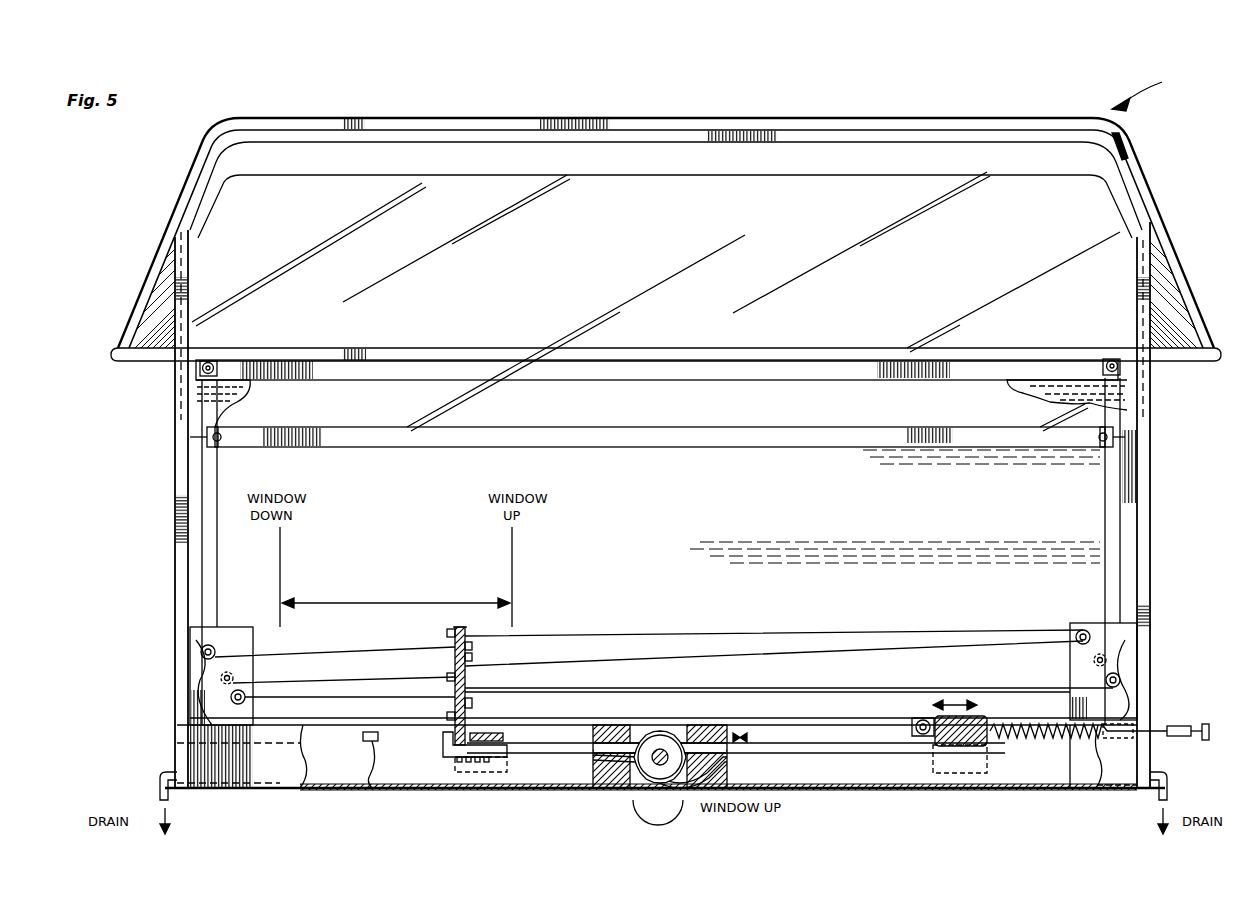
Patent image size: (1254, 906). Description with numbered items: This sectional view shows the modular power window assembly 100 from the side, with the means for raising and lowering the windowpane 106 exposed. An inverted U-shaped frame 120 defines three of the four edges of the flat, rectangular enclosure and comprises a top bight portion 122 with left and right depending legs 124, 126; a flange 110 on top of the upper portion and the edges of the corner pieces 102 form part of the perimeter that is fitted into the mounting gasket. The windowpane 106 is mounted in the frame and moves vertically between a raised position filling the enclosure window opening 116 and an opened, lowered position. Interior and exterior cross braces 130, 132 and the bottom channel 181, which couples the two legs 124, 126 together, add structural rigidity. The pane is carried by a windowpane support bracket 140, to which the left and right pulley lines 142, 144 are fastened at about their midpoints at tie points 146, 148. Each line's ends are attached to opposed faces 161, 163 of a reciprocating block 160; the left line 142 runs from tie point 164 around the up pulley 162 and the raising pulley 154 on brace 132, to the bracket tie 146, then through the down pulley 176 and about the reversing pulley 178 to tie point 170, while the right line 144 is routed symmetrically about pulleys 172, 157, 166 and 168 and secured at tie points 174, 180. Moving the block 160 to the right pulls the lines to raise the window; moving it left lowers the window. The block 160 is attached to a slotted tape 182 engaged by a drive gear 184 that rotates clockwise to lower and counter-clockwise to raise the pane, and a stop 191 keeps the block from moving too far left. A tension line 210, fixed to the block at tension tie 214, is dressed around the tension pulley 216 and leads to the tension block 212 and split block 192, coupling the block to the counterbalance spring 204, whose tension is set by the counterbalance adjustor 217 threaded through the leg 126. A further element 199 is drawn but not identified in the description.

The power window assembly 100 is at (1154, 93).
The corner pieces 102 is at (160, 287).
The windowpane 106 is at (662, 367).
The flange 110 is at (898, 120).
The enclosure window opening 116 is at (397, 157).
The inverted U-shaped frame 120 is at (1112, 161).
The top bight portion 122 is at (677, 135).
The left depending leg 124 is at (187, 272).
The right depending leg 126 is at (1136, 283).
The interior cross brace 130 is at (447, 350).
The exterior cross brace 132 is at (180, 370).
The windowpane support bracket 140 is at (738, 447).
The left pulley line 142 is at (203, 532).
The right pulley line 144 is at (1137, 500).
The tie point 146 is at (207, 437).
The tie point 148 is at (1117, 433).
The raising pulley 154 is at (210, 352).
The pulley 157 is at (1108, 352).
The reciprocating block 160 is at (466, 629).
The right face of block 161 is at (472, 660).
The up pulley 162 is at (202, 648).
The opposed face of block 163 is at (448, 633).
The tie point 164 is at (470, 643).
The pulley 166 is at (1120, 681).
The reversing pulley 168 is at (231, 695).
The tie point 170 is at (472, 703).
The pulley 172 is at (1107, 657).
The tie point 174 is at (451, 626).
The down pulley 176 is at (220, 678).
The reversing pulley 178 is at (1085, 630).
The tie point 180 is at (448, 677).
The bottom channel 181 is at (250, 789).
The slotted tape 182 is at (528, 758).
The drive gear 184 is at (660, 744).
The stop 191 is at (365, 789).
The split block 192 is at (620, 727).
The clip 199 is at (740, 732).
The counterbalance spring 204 is at (1042, 745).
The tension line 210 is at (810, 717).
The tension block 212 is at (987, 715).
The tension tie 214 is at (448, 717).
The tension pulley 216 is at (923, 717).
The counterbalance adjustor 217 is at (1177, 740).